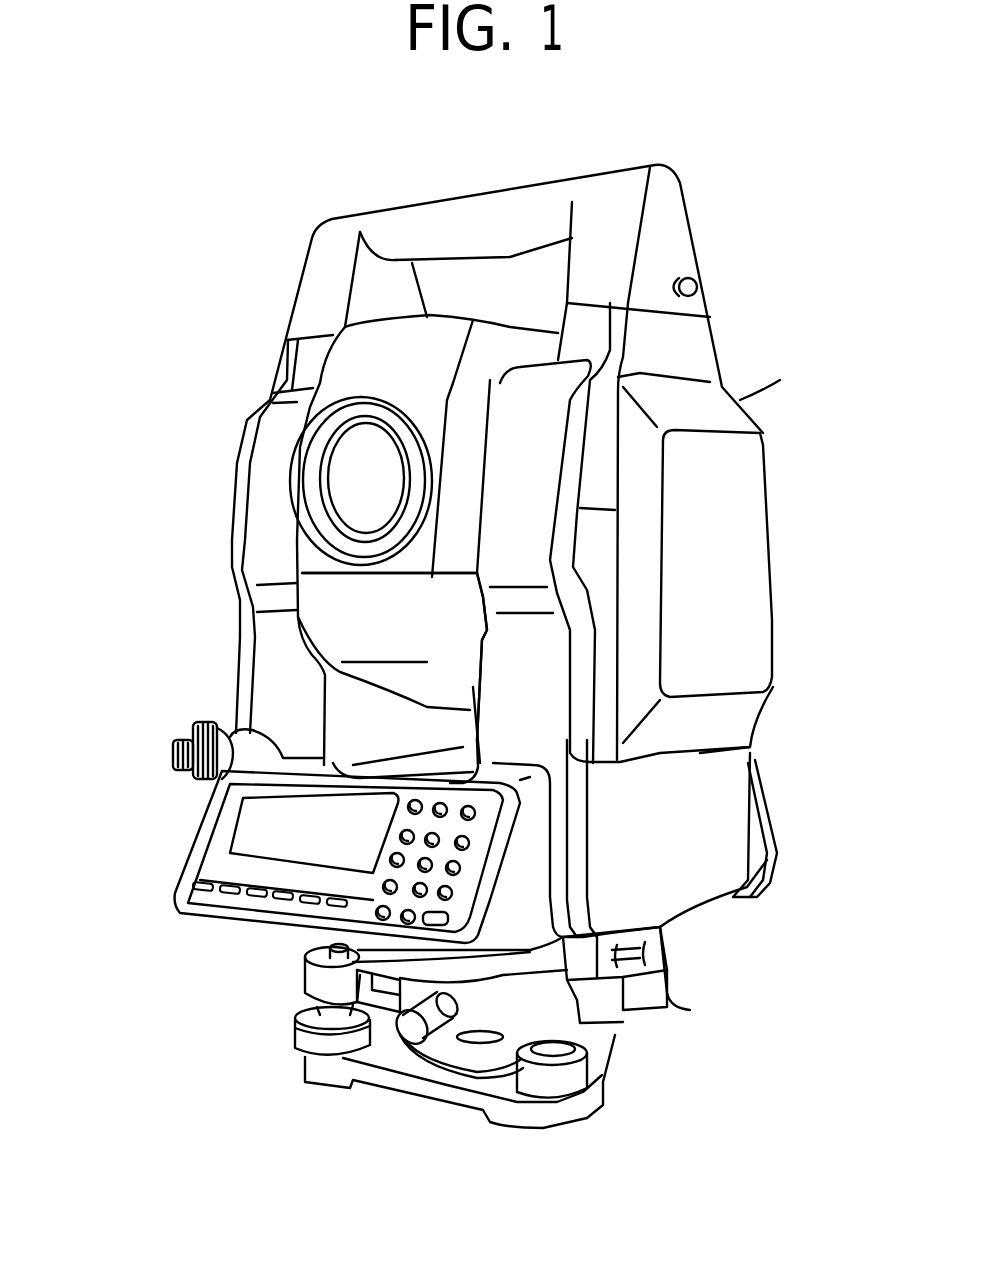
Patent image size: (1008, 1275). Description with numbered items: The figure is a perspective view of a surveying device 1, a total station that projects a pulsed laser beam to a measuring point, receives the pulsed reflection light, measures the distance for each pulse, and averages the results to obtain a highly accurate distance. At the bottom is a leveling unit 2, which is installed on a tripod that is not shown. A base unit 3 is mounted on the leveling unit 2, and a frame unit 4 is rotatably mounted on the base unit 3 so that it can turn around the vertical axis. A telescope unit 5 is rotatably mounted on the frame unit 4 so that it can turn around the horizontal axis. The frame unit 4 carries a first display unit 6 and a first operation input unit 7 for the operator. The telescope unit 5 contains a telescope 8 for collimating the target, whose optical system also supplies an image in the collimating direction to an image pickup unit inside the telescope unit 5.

The surveying device 1 is at (475, 587).
The leveling unit 2 is at (305, 1077).
The base unit 3 is at (670, 1000).
The frame unit 4 is at (740, 402).
The telescope unit 5 is at (332, 622).
The first display unit 6 is at (270, 822).
The first operation input unit 7 is at (263, 910).
The telescope 8 is at (350, 472).